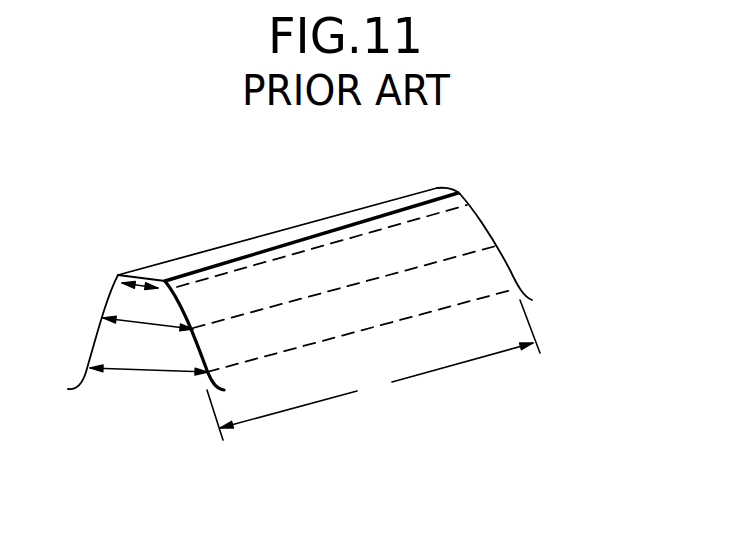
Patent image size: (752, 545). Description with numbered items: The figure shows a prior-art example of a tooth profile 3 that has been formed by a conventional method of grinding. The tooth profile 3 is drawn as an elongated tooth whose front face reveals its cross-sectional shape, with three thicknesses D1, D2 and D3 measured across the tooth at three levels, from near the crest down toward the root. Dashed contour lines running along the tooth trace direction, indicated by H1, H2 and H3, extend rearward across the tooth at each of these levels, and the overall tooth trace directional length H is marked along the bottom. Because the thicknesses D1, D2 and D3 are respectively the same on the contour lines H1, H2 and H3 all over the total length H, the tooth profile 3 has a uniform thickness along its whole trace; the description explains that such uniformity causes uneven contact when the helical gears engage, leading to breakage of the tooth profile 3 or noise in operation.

The tooth profile 3 is at (394, 257).
The tooth trace directional length H is at (373, 370).
The tooth trace direction contour line H1 is at (467, 202).
The tooth trace direction contour line H2 is at (497, 242).
The tooth trace direction contour line H3 is at (518, 290).
The thickness D1 is at (141, 285).
The thickness D2 is at (125, 322).
The thickness D3 is at (147, 373).